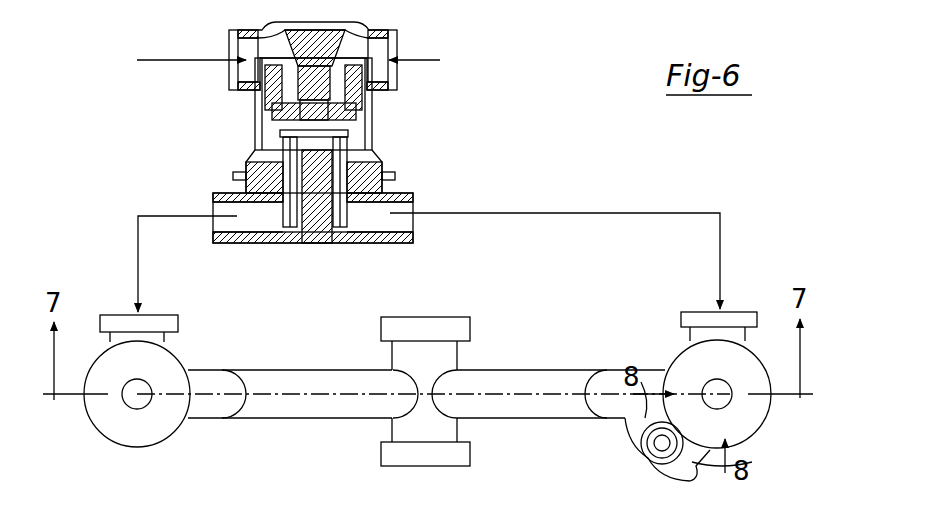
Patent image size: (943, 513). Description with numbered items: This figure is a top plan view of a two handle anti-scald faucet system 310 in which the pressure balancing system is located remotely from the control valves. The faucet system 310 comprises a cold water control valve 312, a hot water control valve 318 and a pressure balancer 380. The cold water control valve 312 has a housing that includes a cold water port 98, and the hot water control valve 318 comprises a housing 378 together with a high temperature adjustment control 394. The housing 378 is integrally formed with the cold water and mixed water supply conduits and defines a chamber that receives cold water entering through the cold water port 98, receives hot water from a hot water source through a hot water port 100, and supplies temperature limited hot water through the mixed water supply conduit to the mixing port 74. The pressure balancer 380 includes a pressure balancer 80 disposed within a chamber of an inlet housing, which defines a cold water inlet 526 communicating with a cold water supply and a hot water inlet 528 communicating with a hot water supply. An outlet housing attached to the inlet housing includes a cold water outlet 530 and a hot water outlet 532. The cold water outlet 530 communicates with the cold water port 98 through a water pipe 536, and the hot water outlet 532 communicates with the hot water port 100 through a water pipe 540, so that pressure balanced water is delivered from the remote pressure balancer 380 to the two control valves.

The faucet system 310 is at (771, 182).
The cold water control valve 312 is at (116, 432).
The cold water port 98 is at (156, 315).
The hot water port 100 is at (752, 312).
The mixing port 74 is at (436, 317).
The hot water control valve 318 is at (654, 332).
The housing 378 is at (746, 420).
The high temperature adjustment control 394 is at (650, 458).
The water pipe 536 is at (138, 240).
The water pipe 540 is at (626, 212).
The pressure balancer 380 is at (529, 80).
The cold water inlet 526 is at (243, 52).
The hot water inlet 528 is at (400, 55).
The pressure balancer 80 is at (292, 117).
The cold water outlet 530 is at (228, 208).
The hot water outlet 532 is at (403, 207).